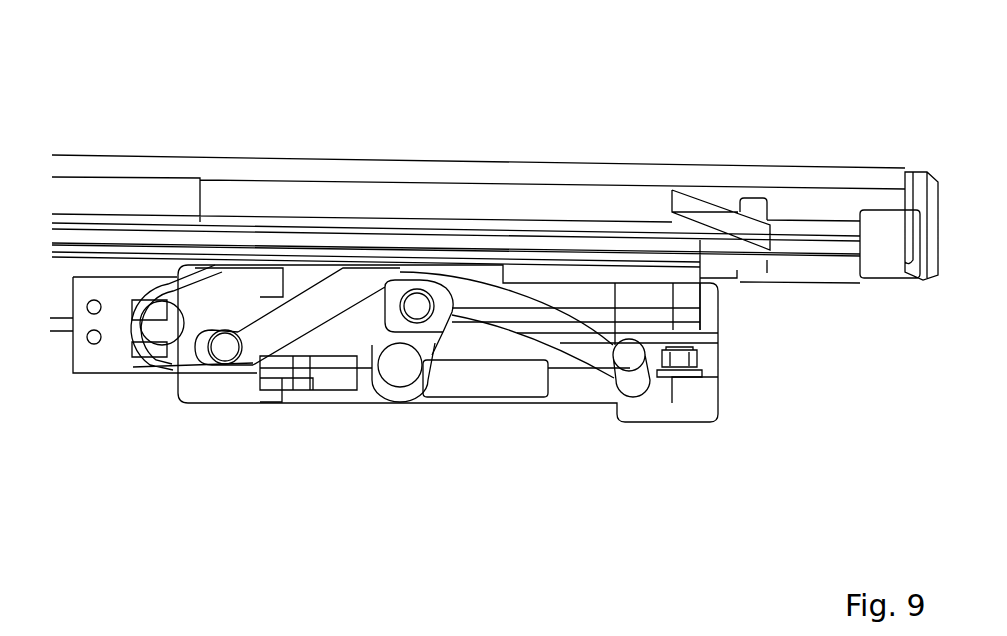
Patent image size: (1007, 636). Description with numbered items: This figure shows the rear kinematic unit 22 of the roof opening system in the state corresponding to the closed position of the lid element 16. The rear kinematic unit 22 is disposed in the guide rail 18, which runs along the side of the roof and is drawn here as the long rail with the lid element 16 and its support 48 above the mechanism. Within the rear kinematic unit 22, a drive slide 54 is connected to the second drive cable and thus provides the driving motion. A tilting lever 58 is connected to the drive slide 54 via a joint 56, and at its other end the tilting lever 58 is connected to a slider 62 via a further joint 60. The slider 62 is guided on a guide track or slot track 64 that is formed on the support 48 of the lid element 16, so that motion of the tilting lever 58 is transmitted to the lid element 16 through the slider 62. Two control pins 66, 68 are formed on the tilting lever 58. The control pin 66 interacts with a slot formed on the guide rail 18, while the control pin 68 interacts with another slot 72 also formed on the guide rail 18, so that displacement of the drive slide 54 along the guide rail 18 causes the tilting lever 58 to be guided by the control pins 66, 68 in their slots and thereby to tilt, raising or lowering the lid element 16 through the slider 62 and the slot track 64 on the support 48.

The lid element 16 is at (355, 165).
The guide rail 18 is at (197, 403).
The rear kinematic unit 22 is at (537, 413).
The support 48 is at (65, 272).
The drive slide 54 is at (325, 380).
The joint 56 is at (402, 382).
The tilting lever 58 is at (367, 333).
The joint 60 is at (162, 338).
The slider 62 is at (113, 285).
The slot track 64 is at (63, 331).
The control pin 66 is at (223, 348).
The control pin 68 is at (417, 313).
The slot 72 is at (612, 387).